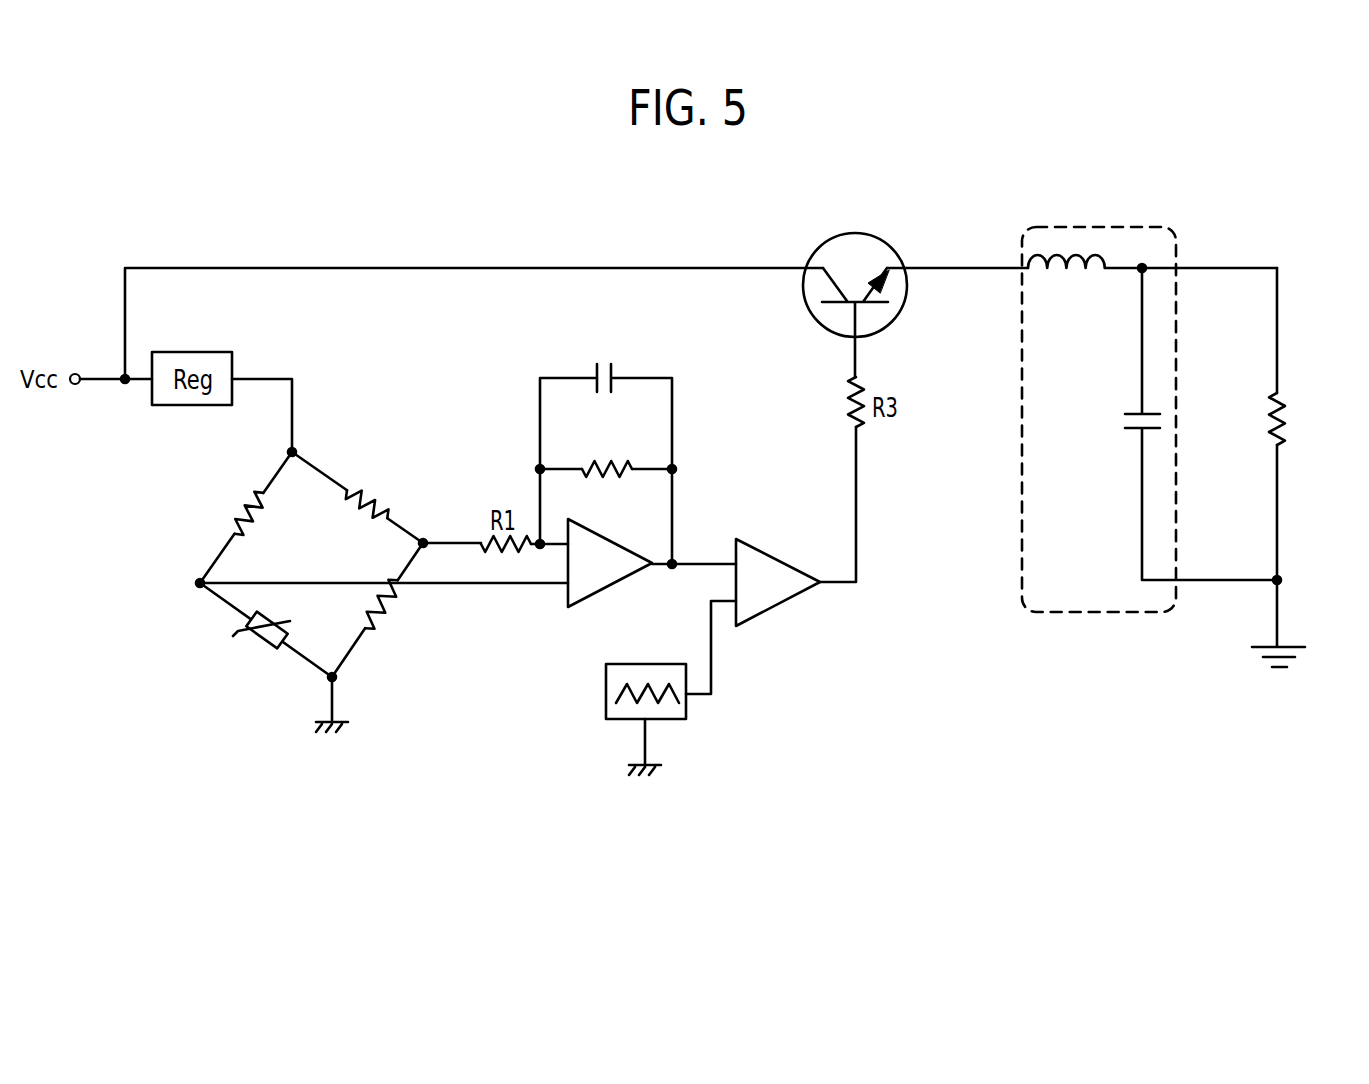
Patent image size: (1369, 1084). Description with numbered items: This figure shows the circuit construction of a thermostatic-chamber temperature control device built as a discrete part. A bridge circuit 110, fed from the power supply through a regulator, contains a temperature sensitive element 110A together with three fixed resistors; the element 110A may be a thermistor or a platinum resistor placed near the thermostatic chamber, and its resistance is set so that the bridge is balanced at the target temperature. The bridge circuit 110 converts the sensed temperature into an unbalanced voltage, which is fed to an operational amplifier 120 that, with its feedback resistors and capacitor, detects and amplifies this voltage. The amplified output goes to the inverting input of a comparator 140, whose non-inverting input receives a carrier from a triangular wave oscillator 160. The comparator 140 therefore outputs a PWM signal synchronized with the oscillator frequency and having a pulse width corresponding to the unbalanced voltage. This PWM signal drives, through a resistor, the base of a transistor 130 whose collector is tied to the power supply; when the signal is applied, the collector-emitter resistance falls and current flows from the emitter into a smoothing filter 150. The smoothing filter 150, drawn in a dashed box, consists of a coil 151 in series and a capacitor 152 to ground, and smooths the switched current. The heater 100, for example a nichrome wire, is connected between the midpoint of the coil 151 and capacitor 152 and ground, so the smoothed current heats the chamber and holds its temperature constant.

The heater 100 is at (1293, 410).
The bridge circuit 110 is at (186, 548).
The temperature sensitive element 110A is at (267, 643).
The operational amplifier 120 is at (613, 587).
The transistor 130 is at (852, 261).
The comparator 140 is at (768, 610).
The smoothing filter 150 is at (1083, 617).
The coil 151 is at (1057, 253).
The capacitor 152 is at (1133, 435).
The triangular wave oscillator 160 is at (665, 721).